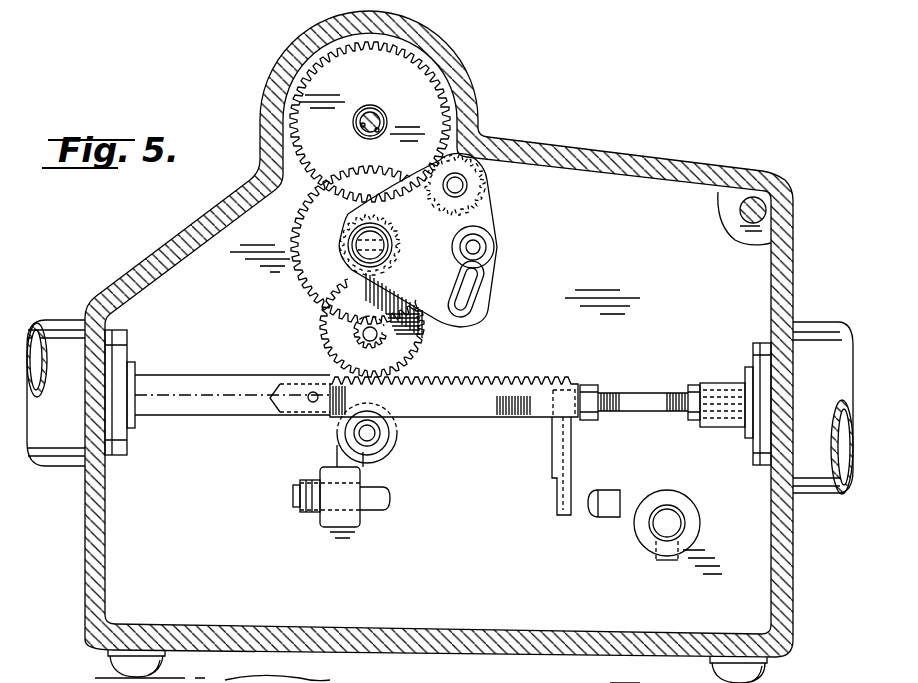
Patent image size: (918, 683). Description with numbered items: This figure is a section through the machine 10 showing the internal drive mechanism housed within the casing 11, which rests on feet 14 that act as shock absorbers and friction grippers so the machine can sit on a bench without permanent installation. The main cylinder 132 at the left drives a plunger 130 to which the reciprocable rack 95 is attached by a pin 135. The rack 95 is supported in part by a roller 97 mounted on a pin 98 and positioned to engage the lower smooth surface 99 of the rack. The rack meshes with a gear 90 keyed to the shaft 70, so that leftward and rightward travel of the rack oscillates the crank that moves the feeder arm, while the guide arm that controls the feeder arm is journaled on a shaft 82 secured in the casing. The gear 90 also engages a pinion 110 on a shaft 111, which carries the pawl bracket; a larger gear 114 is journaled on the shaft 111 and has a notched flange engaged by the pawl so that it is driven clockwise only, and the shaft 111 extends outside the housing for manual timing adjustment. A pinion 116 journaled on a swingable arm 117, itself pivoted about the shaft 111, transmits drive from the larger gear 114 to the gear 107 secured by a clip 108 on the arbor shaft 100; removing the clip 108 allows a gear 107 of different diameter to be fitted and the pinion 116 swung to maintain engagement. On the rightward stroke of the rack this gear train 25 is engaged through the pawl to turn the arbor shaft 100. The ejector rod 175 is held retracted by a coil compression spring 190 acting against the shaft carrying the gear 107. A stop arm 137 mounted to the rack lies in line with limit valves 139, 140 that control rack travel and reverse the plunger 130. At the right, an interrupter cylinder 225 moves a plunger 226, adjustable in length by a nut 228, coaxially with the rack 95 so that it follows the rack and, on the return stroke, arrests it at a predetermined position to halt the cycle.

The machine 10 is at (656, 150).
The casing 11 is at (558, 142).
The feet 14 is at (108, 660).
The gear train 25 is at (311, 349).
The shaft 70 is at (355, 330).
The shaft 82 is at (673, 523).
The gear 90 is at (405, 347).
The rack 95 is at (466, 405).
The roller 97 is at (383, 447).
The pin 98 is at (362, 433).
The lower smooth surface 99 is at (412, 417).
The arbor shaft 100 is at (378, 111).
The gear 107 is at (428, 72).
The clip 108 is at (386, 74).
The pinion 110 is at (346, 226).
The shaft 111 is at (355, 244).
The larger gear 114 is at (302, 280).
The pinion 116 is at (478, 172).
The swingable arm 117 is at (488, 213).
The plunger 130 is at (228, 414).
The main cylinder 132 is at (46, 462).
The pin 135 is at (312, 400).
The stop arm 137 is at (556, 460).
The limit valve 139 is at (373, 503).
The limit valve 140 is at (604, 512).
The rod 175 is at (377, 133).
The coil compression spring 190 is at (362, 128).
The cylinder 225 is at (813, 477).
The plunger 226 is at (646, 398).
The nut 228 is at (690, 420).